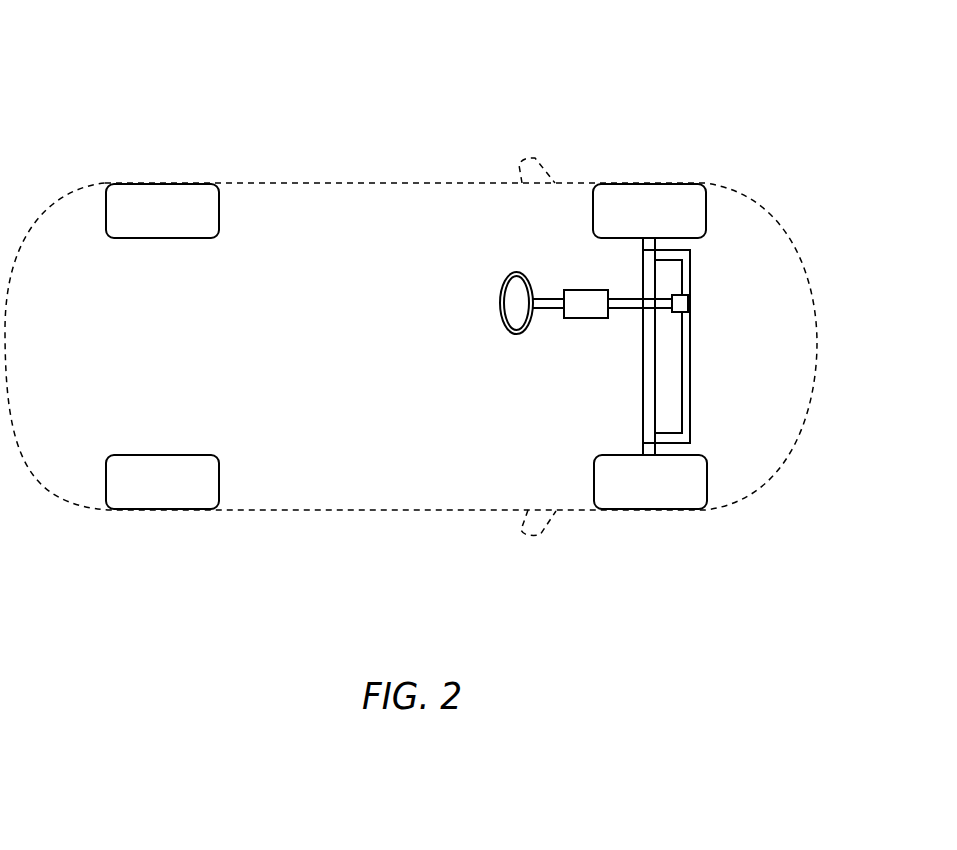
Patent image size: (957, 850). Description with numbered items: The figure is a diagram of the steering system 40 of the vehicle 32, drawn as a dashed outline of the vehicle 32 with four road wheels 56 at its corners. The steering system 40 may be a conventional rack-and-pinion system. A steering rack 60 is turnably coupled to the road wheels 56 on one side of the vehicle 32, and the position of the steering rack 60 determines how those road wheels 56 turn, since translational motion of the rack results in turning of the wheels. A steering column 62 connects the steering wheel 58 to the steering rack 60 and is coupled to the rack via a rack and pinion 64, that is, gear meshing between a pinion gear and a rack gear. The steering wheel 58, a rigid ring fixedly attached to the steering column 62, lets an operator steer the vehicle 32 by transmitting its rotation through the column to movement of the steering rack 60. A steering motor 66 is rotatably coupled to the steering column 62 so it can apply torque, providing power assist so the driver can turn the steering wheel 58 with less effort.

The vehicle 32 is at (126, 69).
The steering system 40 is at (612, 143).
The road wheels 56 is at (185, 192).
The steering wheel 58 is at (515, 336).
The steering rack 60 is at (690, 360).
The steering column 62 is at (624, 297).
The rack and pinion 64 is at (690, 304).
The steering motor 66 is at (594, 319).